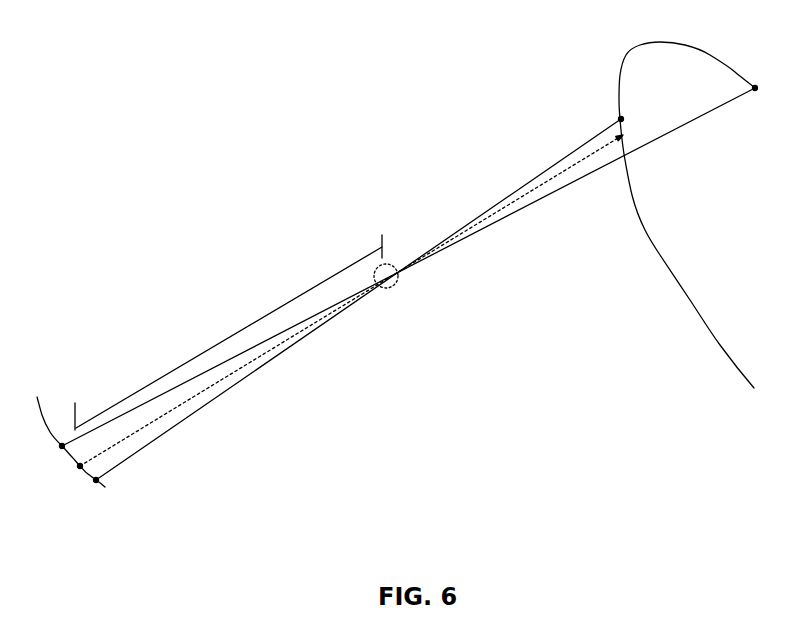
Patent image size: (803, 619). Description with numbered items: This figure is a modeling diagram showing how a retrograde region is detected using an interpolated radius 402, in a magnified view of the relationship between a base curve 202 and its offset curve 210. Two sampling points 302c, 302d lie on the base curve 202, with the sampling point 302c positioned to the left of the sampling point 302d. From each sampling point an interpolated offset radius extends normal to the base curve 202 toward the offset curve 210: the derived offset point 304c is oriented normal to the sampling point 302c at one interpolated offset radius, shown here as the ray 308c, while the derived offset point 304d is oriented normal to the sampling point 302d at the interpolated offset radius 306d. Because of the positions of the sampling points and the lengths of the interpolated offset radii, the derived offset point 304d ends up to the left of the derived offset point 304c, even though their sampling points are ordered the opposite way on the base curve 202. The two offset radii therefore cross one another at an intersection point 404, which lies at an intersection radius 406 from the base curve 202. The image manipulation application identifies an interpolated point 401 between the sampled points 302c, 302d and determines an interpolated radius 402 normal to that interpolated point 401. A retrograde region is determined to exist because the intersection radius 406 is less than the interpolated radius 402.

The base curve 202 is at (47, 433).
The offset curve 210 is at (660, 249).
The sampling point 302c is at (62, 449).
The sampling point 302d is at (96, 485).
The derived offset point 304c is at (625, 120).
The derived offset point 304d is at (759, 89).
The interpolated offset radius 306d is at (167, 438).
The ray 308c is at (110, 423).
The interpolated point 401 is at (82, 469).
The interpolated radius 402 is at (88, 470).
The intersection point 404 is at (394, 282).
The intersection radius 406 is at (189, 360).